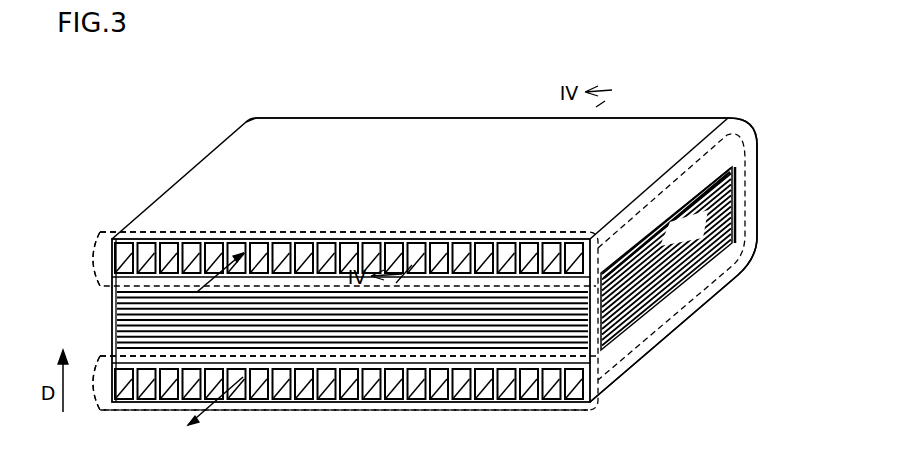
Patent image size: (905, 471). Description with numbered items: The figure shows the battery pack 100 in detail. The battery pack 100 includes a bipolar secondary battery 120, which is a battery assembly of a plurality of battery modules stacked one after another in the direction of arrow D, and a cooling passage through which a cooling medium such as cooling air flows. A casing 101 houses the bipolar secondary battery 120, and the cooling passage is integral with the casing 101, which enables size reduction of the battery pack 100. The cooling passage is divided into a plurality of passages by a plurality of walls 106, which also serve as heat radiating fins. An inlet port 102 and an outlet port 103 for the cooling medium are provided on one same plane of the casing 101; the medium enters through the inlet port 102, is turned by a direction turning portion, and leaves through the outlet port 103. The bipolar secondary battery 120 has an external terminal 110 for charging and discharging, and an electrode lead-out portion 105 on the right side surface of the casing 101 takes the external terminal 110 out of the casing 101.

The battery pack 100 is at (724, 38).
The casing 101 is at (638, 133).
The inlet port 102 is at (102, 233).
The outlet port 103 is at (110, 412).
The electrode lead-out portion 105 is at (745, 208).
The walls 106 is at (266, 247).
The external terminal 110 is at (683, 230).
The bipolar secondary battery 120 is at (402, 330).